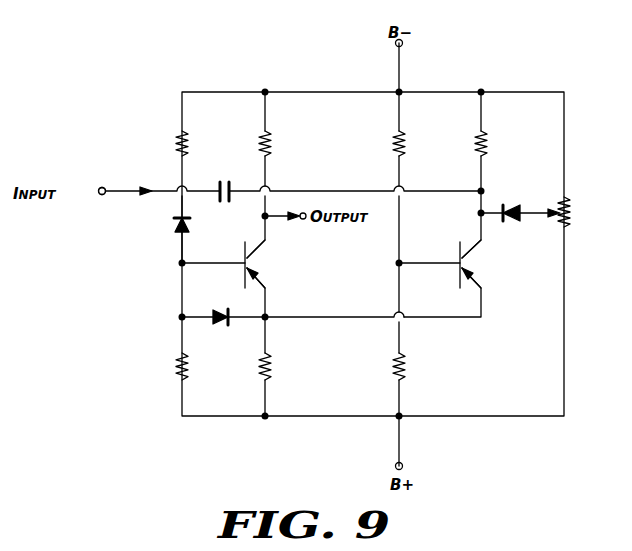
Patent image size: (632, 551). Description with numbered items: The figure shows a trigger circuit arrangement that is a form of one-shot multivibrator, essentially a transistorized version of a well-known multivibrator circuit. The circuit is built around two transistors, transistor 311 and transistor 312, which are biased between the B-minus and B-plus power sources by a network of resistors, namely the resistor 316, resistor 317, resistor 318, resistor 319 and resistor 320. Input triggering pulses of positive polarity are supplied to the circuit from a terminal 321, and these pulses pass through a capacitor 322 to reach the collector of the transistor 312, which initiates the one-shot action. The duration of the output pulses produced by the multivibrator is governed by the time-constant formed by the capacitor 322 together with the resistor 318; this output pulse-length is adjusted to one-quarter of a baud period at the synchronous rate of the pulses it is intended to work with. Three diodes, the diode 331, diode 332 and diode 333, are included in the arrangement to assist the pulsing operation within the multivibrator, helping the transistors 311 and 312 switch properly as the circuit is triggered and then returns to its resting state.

The transistor 311 is at (243, 252).
The transistor 312 is at (458, 252).
The resistor 316 is at (270, 144).
The resistor 317 is at (404, 142).
The resistor 318 is at (486, 142).
The resistor 319 is at (270, 364).
The resistor 320 is at (405, 364).
The terminal 321 is at (103, 188).
The capacitor 322 is at (236, 176).
The diode 331 is at (176, 231).
The diode 332 is at (215, 320).
The diode 333 is at (518, 222).